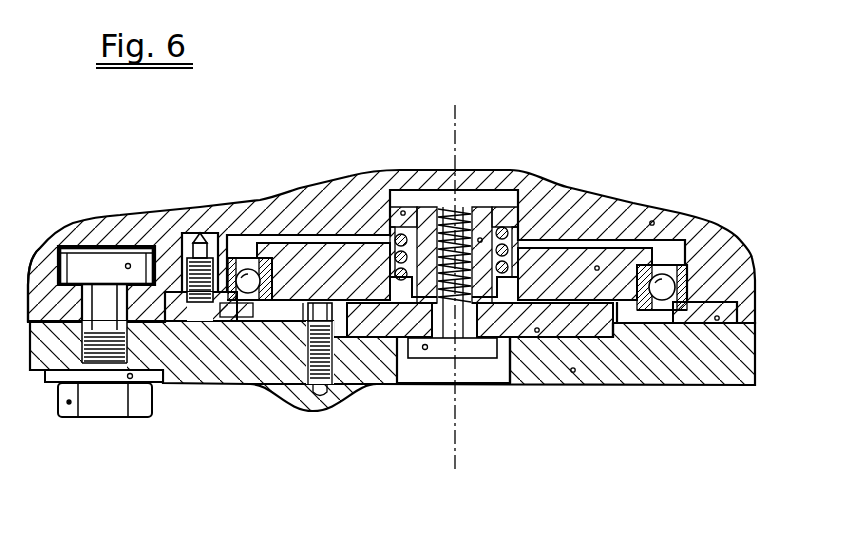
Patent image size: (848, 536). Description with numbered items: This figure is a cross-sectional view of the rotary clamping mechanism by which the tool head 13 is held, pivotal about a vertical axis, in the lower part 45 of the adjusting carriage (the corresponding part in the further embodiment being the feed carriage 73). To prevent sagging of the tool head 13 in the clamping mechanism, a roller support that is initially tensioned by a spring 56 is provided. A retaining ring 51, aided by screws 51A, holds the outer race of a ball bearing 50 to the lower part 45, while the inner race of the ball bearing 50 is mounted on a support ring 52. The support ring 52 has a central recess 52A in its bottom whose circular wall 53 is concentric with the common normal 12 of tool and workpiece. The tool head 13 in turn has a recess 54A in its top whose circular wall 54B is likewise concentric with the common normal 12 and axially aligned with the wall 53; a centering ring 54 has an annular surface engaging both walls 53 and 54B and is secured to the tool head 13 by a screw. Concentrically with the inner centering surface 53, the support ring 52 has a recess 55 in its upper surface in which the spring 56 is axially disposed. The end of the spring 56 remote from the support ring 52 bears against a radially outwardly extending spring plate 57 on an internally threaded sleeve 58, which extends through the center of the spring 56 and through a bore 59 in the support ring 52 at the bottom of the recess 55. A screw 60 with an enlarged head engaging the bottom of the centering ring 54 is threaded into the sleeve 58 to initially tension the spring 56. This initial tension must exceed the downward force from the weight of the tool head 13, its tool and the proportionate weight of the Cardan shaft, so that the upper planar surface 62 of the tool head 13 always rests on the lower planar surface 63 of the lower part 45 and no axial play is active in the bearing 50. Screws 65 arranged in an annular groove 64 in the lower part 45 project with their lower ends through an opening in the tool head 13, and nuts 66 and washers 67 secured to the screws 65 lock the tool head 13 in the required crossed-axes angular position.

The common normal 12 is at (453, 157).
The tool head 13 is at (574, 373).
The lower part of the adjusting carriage 45 is at (718, 247).
The ball bearing 50 is at (661, 301).
The retaining ring 51 is at (717, 321).
The screws 51A is at (180, 268).
The support ring 52 is at (598, 265).
The central recess 52A is at (302, 321).
The circular wall 53 is at (613, 330).
The centering ring 54 is at (537, 333).
The recess 54A is at (516, 333).
The circular wall 54B is at (613, 338).
The recess 55 is at (540, 207).
The spring 56 is at (519, 210).
The spring plate 57 is at (403, 210).
The internally threaded sleeve 58 is at (481, 237).
The bore 59 is at (489, 335).
The screw 60 is at (426, 351).
The upper planar surface 62 is at (184, 384).
The lower planar surface 63 is at (30, 290).
The annular groove 64 is at (97, 248).
The screws 65 is at (130, 262).
The nuts 66 is at (70, 420).
The washers 67 is at (135, 420).
The feed carriage 73 is at (653, 221).